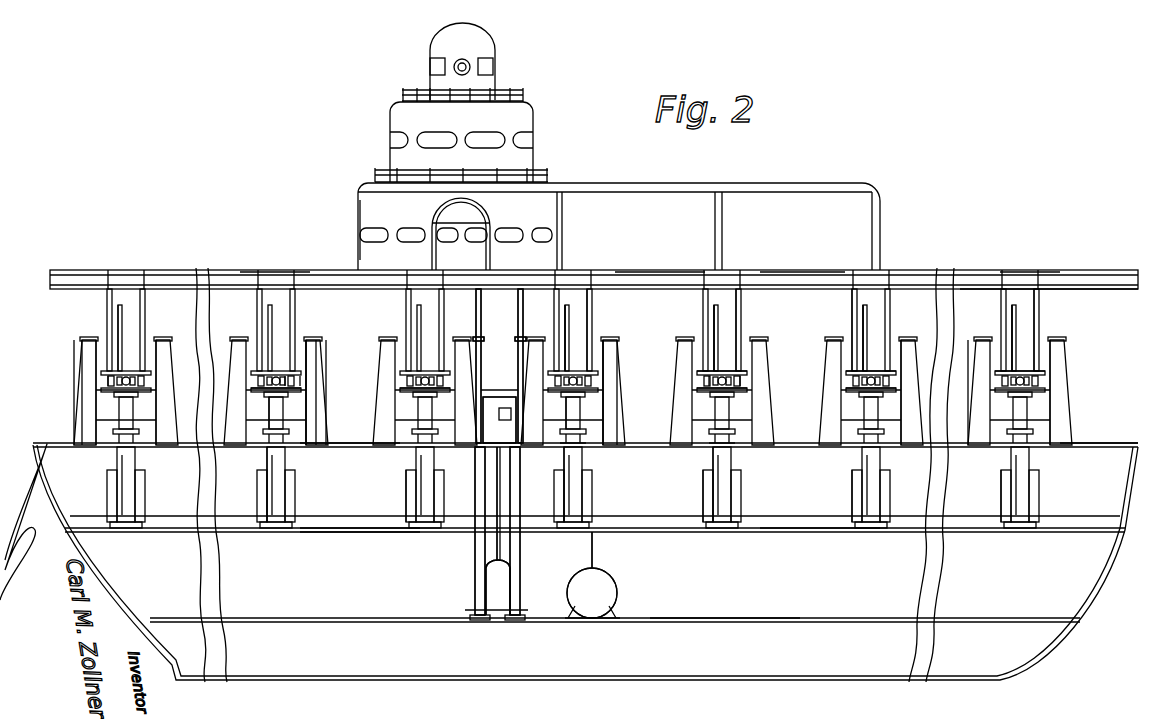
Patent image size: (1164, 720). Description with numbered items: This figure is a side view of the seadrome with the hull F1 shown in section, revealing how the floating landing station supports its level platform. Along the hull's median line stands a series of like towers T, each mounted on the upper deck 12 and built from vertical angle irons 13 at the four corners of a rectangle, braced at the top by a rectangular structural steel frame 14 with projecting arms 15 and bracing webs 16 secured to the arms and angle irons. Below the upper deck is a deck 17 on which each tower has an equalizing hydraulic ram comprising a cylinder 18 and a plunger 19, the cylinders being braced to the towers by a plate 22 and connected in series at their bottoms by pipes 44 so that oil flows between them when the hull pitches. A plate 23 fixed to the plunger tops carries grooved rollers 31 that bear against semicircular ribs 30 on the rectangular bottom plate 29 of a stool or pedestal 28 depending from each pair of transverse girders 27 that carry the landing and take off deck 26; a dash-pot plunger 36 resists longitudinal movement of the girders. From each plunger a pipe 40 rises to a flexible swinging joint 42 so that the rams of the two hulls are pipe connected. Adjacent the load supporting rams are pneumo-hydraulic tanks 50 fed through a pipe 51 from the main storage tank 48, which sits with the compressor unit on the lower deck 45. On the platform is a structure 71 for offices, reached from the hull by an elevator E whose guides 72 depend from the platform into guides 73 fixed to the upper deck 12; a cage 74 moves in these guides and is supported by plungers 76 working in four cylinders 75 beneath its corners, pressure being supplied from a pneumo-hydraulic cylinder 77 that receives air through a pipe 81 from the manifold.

The structure 71 is at (360, 211).
The transverse girders 27 is at (293, 278).
The landing and take off deck 26 is at (993, 272).
The projecting arms 15 is at (95, 338).
The rectangular structural steel frame 14 is at (132, 343).
The bracing webs 16 is at (160, 352).
The towers T is at (88, 352).
The grooved rollers 31 is at (110, 383).
The plate 23 is at (255, 387).
The plunger 19 is at (272, 398).
The plunger 36 is at (303, 378).
The angle irons 13 is at (330, 408).
The upper deck 12 is at (342, 450).
The guides 72 is at (519, 309).
The guides 73 is at (519, 347).
The cage 74 is at (506, 395).
The stool or pedestal 28 is at (593, 303).
The pipe 40 is at (565, 350).
The flexible swinging joint 42 is at (713, 320).
The bottom plate 29 is at (740, 371).
The parallel ribs 30 is at (857, 352).
The plate 22 is at (557, 447).
The cylinder 18 is at (282, 462).
The plungers 76 is at (520, 448).
The elevator E is at (471, 464).
The pneumo-hydraulic tank 50 is at (408, 497).
The pipes 44 is at (356, 520).
The deck 17 is at (372, 534).
The cylinders 75 is at (477, 566).
The pneumo-hydraulic cylinder 77 is at (493, 586).
The pipe 81 is at (500, 548).
The pipe 51 is at (594, 556).
The main storage tank 48 is at (616, 588).
The lower deck 45 is at (728, 618).
The hull F1 is at (1118, 447).